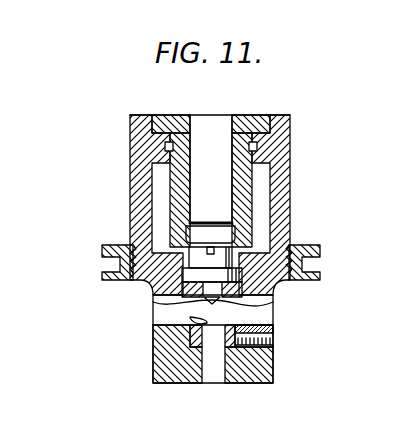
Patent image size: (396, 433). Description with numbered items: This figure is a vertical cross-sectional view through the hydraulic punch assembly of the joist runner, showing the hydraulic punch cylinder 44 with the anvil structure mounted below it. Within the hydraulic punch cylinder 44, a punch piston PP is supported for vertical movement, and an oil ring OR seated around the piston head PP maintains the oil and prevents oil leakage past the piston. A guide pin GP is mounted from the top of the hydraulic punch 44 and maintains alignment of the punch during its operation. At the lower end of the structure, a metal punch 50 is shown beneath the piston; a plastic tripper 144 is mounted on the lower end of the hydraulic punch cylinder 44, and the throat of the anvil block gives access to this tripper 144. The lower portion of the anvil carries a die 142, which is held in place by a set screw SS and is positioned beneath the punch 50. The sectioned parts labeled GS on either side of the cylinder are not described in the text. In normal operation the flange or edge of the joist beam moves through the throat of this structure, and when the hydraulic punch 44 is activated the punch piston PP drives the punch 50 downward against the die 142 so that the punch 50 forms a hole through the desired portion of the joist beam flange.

The hydraulic punch cylinder 44 is at (291, 178).
The punch piston PP is at (252, 201).
The guide pin GP is at (218, 170).
The oil ring OR is at (152, 145).
The gland screw GS is at (93, 263).
The metal punch 50 is at (153, 302).
The plastic tripper 144 is at (273, 302).
The die 142 is at (190, 317).
The set screw SS is at (273, 337).